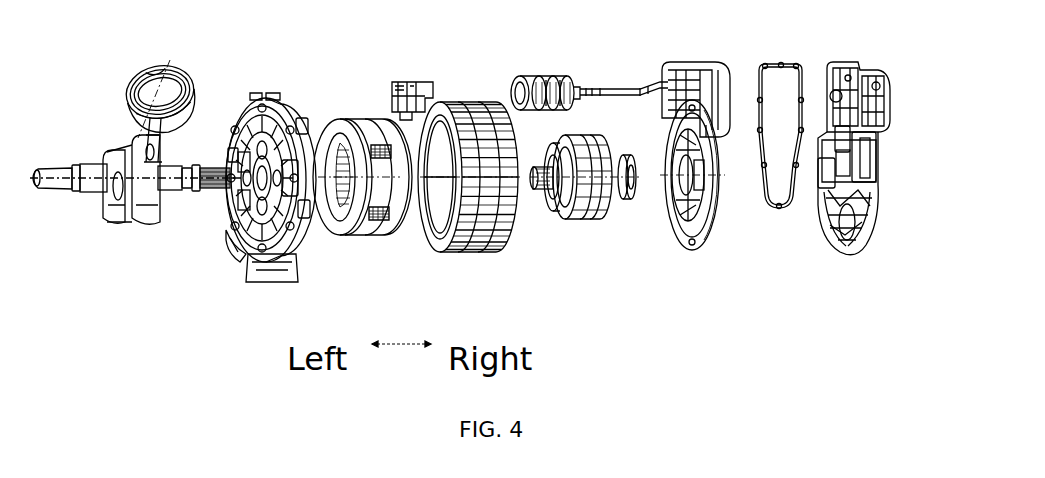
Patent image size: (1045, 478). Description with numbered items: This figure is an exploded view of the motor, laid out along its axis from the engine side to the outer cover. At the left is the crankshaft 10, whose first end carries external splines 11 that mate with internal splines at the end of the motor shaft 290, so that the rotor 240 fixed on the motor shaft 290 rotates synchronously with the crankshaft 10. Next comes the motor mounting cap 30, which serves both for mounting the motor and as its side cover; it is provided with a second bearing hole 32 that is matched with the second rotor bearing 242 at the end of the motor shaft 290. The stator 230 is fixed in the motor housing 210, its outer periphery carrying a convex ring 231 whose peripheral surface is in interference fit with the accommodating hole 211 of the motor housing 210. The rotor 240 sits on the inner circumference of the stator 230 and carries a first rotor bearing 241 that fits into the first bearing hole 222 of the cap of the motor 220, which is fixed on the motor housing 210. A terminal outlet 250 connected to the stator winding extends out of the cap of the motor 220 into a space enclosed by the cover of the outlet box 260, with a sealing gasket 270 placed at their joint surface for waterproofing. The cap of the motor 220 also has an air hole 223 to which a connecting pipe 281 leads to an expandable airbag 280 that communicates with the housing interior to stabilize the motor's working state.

The crankshaft 10 is at (110, 212).
The external splines 11 is at (208, 188).
The motor mounting cap 30 is at (253, 282).
The second bearing hole 32 is at (233, 242).
The motor housing 210 is at (481, 244).
The accommodating hole 211 is at (434, 248).
The cap of the motor 220 is at (698, 254).
The first bearing hole 222 is at (678, 234).
The air hole 223 is at (710, 78).
The stator 230 is at (345, 238).
The convex ring 231 is at (374, 238).
The rotor 240 is at (591, 221).
The first rotor bearing 241 is at (614, 200).
The second rotor bearing 242 is at (555, 212).
The terminal outlet 250 is at (425, 82).
The cover of the outlet box 260 is at (891, 100).
The sealing gasket 270 is at (794, 66).
The airbag 280 is at (545, 76).
The connecting pipe 281 is at (628, 87).
The motor shaft 290 is at (543, 194).